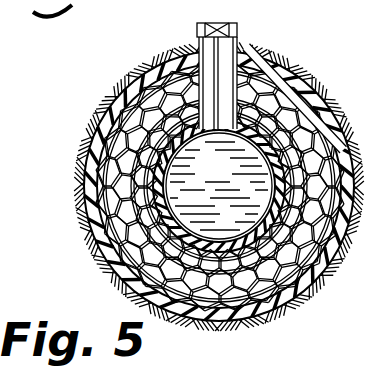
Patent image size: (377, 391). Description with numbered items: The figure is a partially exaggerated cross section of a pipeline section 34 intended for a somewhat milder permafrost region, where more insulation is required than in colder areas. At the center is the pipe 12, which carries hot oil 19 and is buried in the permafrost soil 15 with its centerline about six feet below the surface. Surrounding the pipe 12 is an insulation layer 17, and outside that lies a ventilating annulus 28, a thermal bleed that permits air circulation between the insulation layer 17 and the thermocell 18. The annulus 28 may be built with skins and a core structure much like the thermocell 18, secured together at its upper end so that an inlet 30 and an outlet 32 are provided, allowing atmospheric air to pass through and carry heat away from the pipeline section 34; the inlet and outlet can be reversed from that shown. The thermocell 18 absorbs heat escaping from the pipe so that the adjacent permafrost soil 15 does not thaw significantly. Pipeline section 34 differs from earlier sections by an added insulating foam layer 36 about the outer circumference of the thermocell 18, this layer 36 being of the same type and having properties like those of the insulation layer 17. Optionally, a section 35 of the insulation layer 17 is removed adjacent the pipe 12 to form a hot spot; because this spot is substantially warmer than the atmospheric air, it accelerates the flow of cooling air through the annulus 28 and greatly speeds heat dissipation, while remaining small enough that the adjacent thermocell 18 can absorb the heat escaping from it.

The pipe 12 is at (168, 200).
The permafrost soil 15 is at (157, 55).
The insulation layer 17 is at (274, 180).
The thermocell 18 is at (80, 222).
The hot oil 19 is at (219, 186).
The ventilating annulus 28 is at (236, 250).
The inlet 30 is at (237, 30).
The outlet 32 is at (198, 27).
The pipeline section 34 is at (330, 98).
The section of insulation layer 35 is at (176, 152).
The insulating foam layer 36 is at (110, 100).